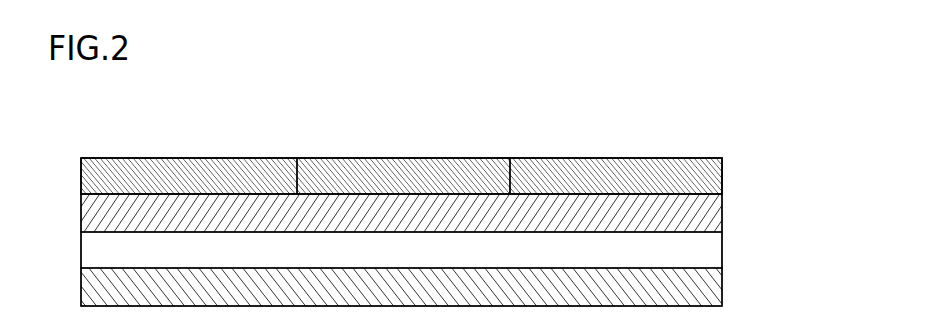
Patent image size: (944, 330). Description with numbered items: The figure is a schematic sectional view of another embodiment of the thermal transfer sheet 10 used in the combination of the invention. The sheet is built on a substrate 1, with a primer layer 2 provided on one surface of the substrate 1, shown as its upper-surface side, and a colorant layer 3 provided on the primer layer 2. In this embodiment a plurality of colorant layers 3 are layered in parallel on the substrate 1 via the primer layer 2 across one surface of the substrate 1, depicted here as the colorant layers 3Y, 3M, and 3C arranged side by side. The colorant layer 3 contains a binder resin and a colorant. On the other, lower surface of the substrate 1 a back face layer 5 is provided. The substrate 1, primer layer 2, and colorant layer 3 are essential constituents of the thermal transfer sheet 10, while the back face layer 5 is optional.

The thermal transfer sheet 10 is at (685, 137).
The colorant layer 3 is at (652, 110).
The colorant layer 3Y is at (207, 193).
The colorant layer 3M is at (405, 193).
The colorant layer 3C is at (612, 193).
The primer layer 2 is at (695, 215).
The substrate 1 is at (695, 254).
The back face layer 5 is at (695, 293).